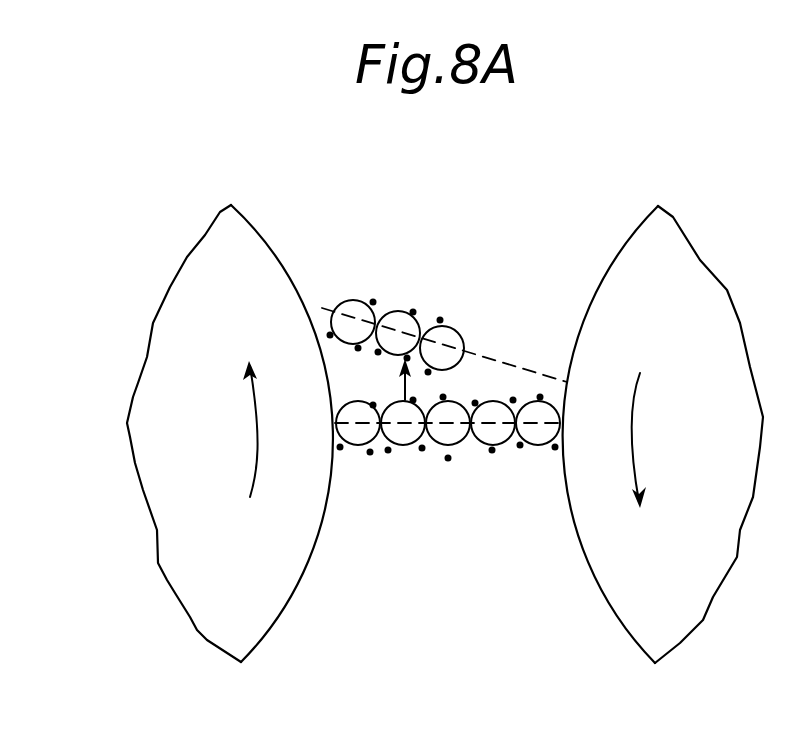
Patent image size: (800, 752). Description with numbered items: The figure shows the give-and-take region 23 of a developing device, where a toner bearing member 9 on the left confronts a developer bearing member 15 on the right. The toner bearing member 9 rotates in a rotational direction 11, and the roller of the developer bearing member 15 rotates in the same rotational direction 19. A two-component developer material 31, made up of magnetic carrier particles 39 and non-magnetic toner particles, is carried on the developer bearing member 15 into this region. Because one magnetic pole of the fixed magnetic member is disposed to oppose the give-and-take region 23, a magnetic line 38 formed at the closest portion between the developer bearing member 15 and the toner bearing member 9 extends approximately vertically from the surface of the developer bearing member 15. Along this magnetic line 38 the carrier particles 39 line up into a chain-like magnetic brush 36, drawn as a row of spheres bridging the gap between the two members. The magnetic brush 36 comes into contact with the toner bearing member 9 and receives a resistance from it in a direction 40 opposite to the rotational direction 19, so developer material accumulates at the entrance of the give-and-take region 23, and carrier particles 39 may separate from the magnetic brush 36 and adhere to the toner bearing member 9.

The toner bearing member 9 is at (195, 303).
The developer bearing member 15 is at (687, 277).
The rotational direction of toner bearing member 11 is at (257, 433).
The rotational direction of developer bearing member roller 19 is at (637, 435).
The two-component developer material 31 is at (469, 264).
The carrier particles 39 is at (392, 325).
The give-and-take region 23 is at (500, 387).
The magnetic line 38 is at (490, 360).
The magnetic brush 36 is at (337, 493).
The direction of resistance 40 is at (403, 390).